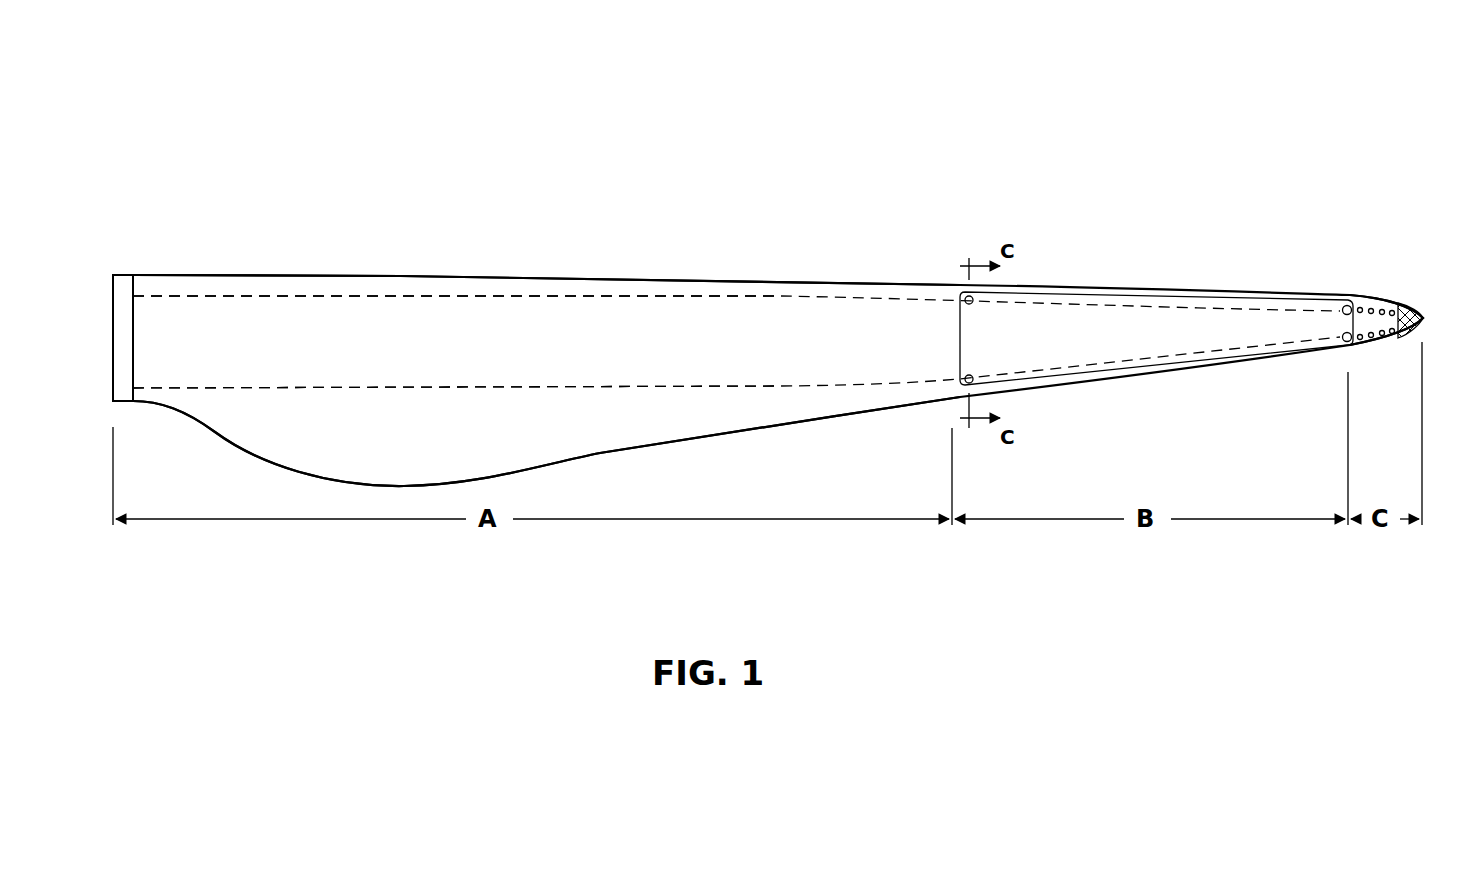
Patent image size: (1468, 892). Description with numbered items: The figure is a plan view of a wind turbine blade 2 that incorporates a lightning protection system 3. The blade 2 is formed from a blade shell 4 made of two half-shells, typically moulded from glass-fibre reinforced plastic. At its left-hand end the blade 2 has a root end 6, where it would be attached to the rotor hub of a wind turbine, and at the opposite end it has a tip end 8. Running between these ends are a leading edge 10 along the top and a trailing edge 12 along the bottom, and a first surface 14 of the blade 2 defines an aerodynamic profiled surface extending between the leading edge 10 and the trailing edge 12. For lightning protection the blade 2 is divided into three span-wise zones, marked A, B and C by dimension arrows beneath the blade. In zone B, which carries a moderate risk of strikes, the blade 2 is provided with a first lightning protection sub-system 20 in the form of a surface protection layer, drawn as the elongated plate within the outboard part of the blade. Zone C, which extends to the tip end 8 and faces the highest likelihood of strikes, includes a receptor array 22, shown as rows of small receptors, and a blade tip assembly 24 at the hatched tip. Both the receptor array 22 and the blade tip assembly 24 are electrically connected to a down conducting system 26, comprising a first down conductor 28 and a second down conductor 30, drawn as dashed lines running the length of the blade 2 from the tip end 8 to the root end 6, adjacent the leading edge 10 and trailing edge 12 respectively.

The wind turbine blade 2 is at (321, 119).
The lightning protection system 3 is at (1191, 590).
The blade shell 4 is at (204, 272).
The root end 6 is at (113, 285).
The tip end 8 is at (1420, 330).
The leading edge 10 is at (393, 275).
The trailing edge 12 is at (263, 457).
The first surface 14 is at (256, 411).
The first lightning protection sub-system 20 is at (1173, 258).
The receptor array 22 is at (1361, 293).
The blade tip assembly 24 is at (1417, 302).
The down conducting system 26 is at (834, 379).
The first down conductor 28 is at (737, 295).
The second down conductor 30 is at (775, 390).